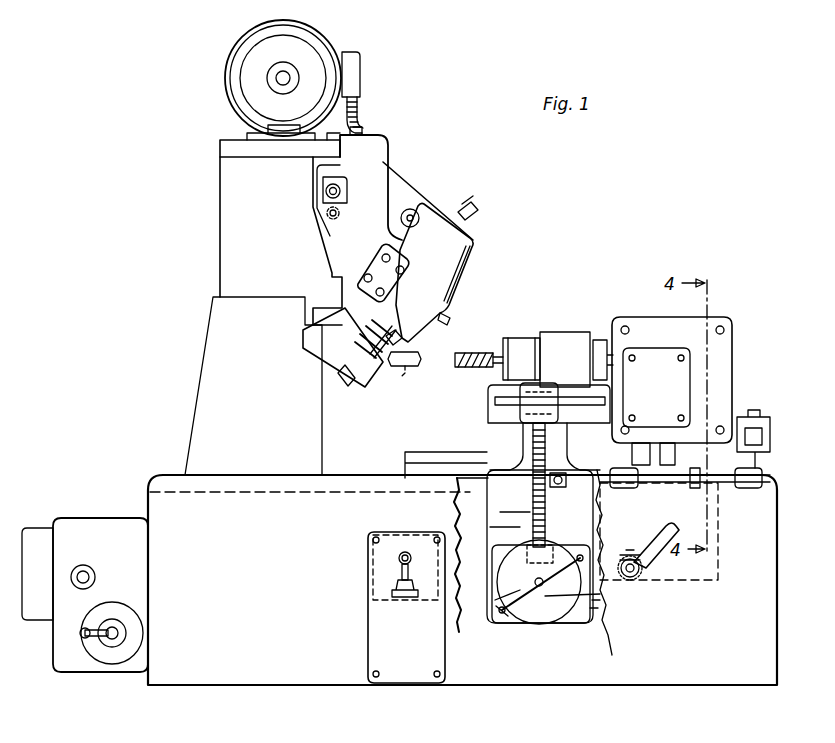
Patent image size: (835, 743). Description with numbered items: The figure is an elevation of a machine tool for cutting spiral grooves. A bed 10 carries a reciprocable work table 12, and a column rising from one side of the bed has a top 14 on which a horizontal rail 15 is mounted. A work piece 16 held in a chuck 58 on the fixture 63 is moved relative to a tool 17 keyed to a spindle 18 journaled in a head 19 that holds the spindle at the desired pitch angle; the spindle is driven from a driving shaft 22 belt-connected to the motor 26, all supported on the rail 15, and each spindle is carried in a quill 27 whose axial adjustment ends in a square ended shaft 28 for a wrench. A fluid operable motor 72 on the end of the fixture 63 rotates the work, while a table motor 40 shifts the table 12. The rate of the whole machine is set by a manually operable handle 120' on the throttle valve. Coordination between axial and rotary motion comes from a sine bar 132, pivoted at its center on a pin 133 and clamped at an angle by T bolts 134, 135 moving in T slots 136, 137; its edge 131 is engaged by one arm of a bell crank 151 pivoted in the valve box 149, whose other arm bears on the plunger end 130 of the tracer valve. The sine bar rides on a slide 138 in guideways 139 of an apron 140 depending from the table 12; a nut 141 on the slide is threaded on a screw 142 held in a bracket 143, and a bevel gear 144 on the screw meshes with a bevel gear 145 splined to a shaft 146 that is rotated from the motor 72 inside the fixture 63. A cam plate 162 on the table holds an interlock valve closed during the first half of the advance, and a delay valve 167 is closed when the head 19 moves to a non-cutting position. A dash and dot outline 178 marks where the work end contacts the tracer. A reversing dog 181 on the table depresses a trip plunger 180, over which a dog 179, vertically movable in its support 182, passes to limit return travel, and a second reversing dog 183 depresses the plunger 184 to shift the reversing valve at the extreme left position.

The bed 10 is at (172, 672).
The work table 12 is at (415, 446).
The top of column 14 is at (214, 323).
The horizontal rail 15 is at (220, 190).
The work piece 16 is at (466, 352).
The tool 17 is at (365, 370).
The spindle 18 is at (405, 352).
The head 19 is at (475, 262).
The driving shaft 22 is at (413, 214).
The motor 26 is at (225, 77).
The quill 27 is at (405, 315).
The square ended shaft 28 is at (450, 318).
The table motor 40 is at (777, 617).
The chuck 58 is at (525, 383).
The fixture 63 is at (732, 330).
The fluid operable motor 72 is at (745, 418).
The handle 120' is at (673, 561).
The plunger end 130 is at (398, 593).
The sine bar edge 131 is at (522, 592).
The sine bar 132 is at (536, 600).
The pin 133 is at (560, 575).
The T bolt 134 is at (505, 612).
The T bolt 135 is at (600, 600).
The T slot 136 is at (500, 618).
The T slot 137 is at (596, 608).
The slide 138 is at (585, 610).
The guideways 139 is at (500, 512).
The apron 140 is at (490, 527).
The nut 141 is at (525, 540).
The screw 142 is at (487, 472).
The bracket 143 is at (523, 387).
The bevel gear 144 is at (524, 428).
The bevel gear 145 is at (550, 393).
The shaft 146 is at (587, 405).
The valve box 149 is at (368, 630).
The bell crank 151 is at (400, 570).
The cam plate 162 is at (697, 490).
The delay valve 167 is at (350, 185).
The dash and dot outline 178 is at (401, 378).
The dog 179 is at (690, 480).
The trip plunger 180 is at (622, 495).
The reversing dog 181 is at (623, 470).
The support 182 is at (710, 490).
The second reversing dog 183 is at (760, 498).
The plunger 184 is at (623, 553).